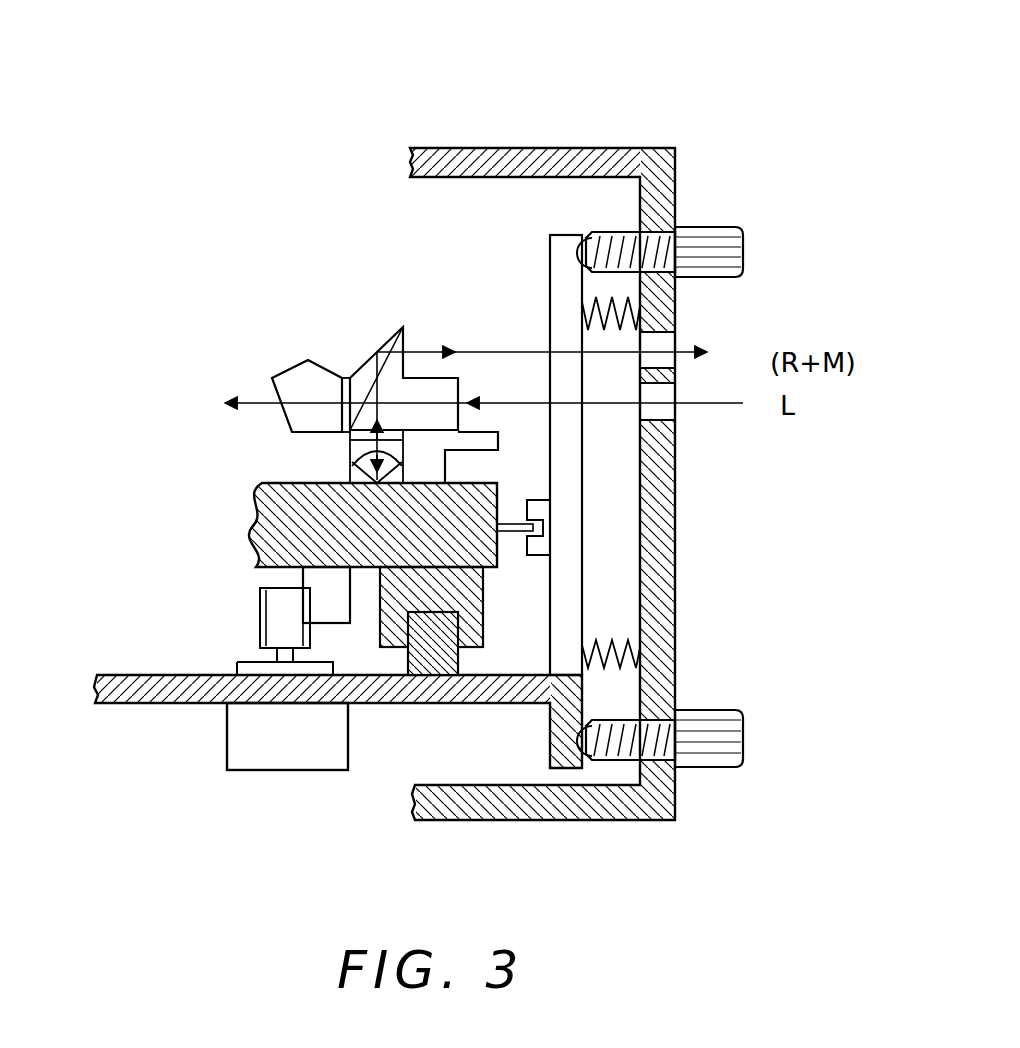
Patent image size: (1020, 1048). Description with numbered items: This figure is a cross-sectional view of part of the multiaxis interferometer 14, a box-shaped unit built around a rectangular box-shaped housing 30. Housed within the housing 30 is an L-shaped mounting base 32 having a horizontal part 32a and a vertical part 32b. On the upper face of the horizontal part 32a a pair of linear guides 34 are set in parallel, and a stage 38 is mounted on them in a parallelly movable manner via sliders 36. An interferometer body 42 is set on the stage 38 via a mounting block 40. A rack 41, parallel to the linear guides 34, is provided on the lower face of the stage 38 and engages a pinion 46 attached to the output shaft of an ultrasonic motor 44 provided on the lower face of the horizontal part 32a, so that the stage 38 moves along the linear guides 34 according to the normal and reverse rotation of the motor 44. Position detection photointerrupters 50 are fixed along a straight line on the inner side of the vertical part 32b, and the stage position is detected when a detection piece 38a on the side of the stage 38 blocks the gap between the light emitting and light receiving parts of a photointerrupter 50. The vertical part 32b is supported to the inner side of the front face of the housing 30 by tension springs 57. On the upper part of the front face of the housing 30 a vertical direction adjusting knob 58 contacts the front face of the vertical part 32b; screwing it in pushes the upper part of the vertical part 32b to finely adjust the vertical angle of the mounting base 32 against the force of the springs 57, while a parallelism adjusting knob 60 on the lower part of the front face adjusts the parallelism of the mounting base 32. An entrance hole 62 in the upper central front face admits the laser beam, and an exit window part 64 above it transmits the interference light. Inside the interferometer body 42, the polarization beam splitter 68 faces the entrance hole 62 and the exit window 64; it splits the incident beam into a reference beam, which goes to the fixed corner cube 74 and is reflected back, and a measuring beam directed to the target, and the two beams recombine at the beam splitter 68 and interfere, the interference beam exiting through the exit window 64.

The multiaxis interferometer 14 is at (481, 72).
The housing 30 is at (567, 160).
The mounting base 32 is at (90, 668).
The horizontal part 32a is at (143, 672).
The vertical part 32b is at (552, 262).
The linear guides 34 is at (428, 655).
The sliders 36 is at (470, 588).
The stage 38 is at (252, 490).
The detection piece 38a is at (513, 522).
The mounting block 40 is at (481, 440).
The rack 41 is at (325, 580).
The interferometer body 42 is at (344, 346).
The ultrasonic motor 44 is at (250, 750).
The pinion 46 is at (272, 620).
The position detection photointerrupter 50 is at (536, 527).
The tension springs 57 is at (612, 300).
The vertical direction adjusting knob 58 is at (727, 257).
The parallelism adjusting knob 60 is at (717, 762).
The entrance hole 62 is at (673, 413).
The exit window part 64 is at (677, 340).
The polarization beam splitter 68 is at (418, 378).
The fixed corner cube 74 is at (357, 470).